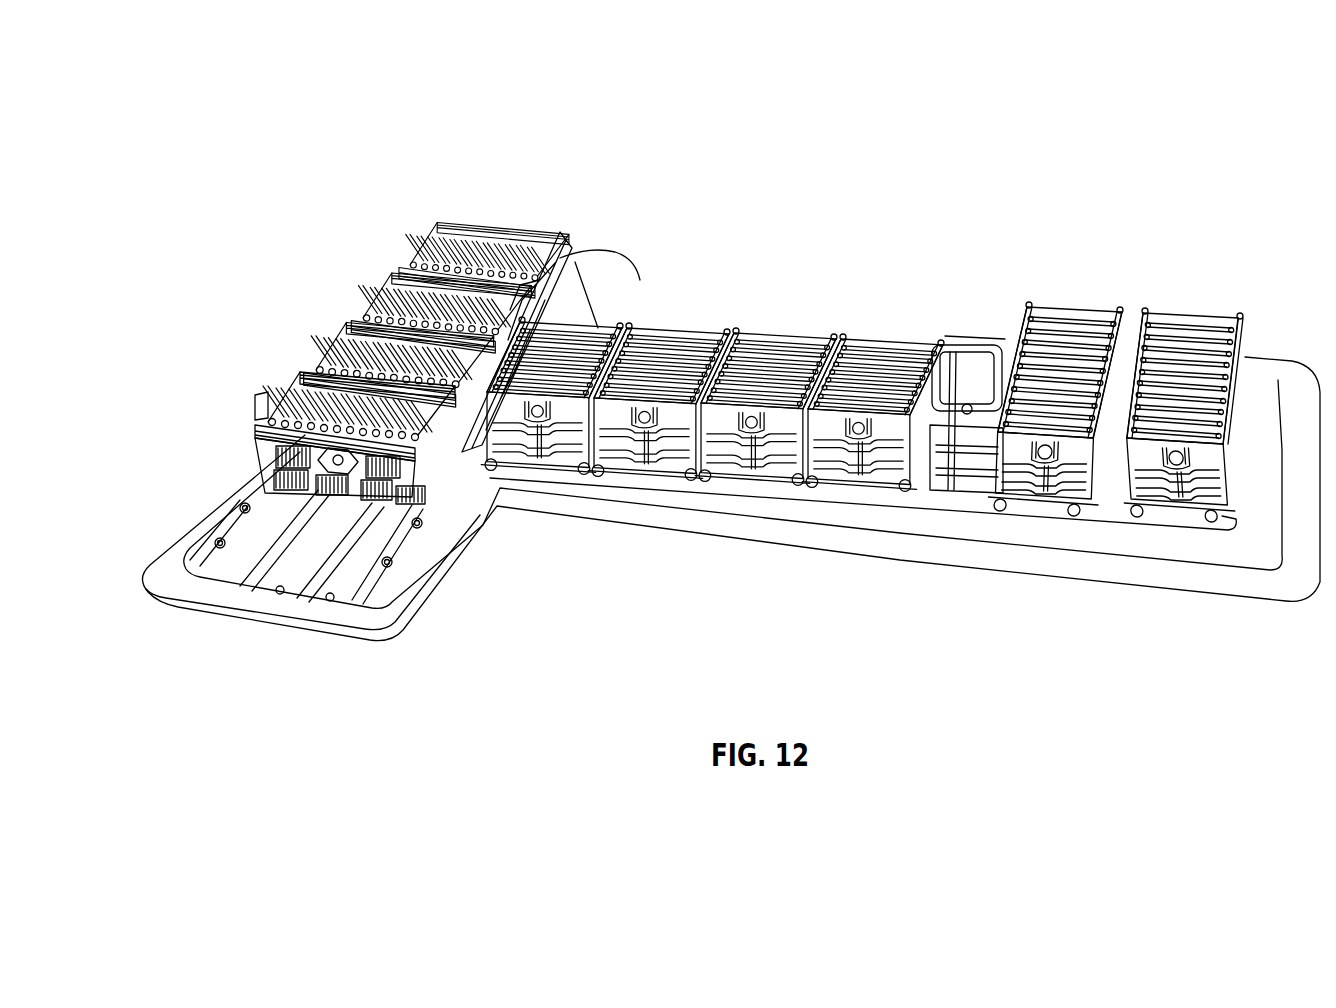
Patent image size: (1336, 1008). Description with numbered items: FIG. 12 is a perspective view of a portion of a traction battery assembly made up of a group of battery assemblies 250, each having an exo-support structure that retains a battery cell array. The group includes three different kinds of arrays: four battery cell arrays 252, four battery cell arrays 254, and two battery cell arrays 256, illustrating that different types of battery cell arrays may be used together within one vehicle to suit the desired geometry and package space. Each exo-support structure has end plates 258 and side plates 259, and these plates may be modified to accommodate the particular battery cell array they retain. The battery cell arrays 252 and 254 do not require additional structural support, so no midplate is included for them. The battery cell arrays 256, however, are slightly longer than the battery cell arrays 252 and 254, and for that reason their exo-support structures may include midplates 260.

The group of battery assemblies 250 is at (676, 88).
The battery cell arrays 252 is at (268, 390).
The battery cell arrays 254 is at (600, 320).
The battery cell arrays 256 is at (1190, 307).
The end plates 258 is at (270, 410).
The side plates 259 is at (530, 233).
The midplates 260 is at (1037, 317).